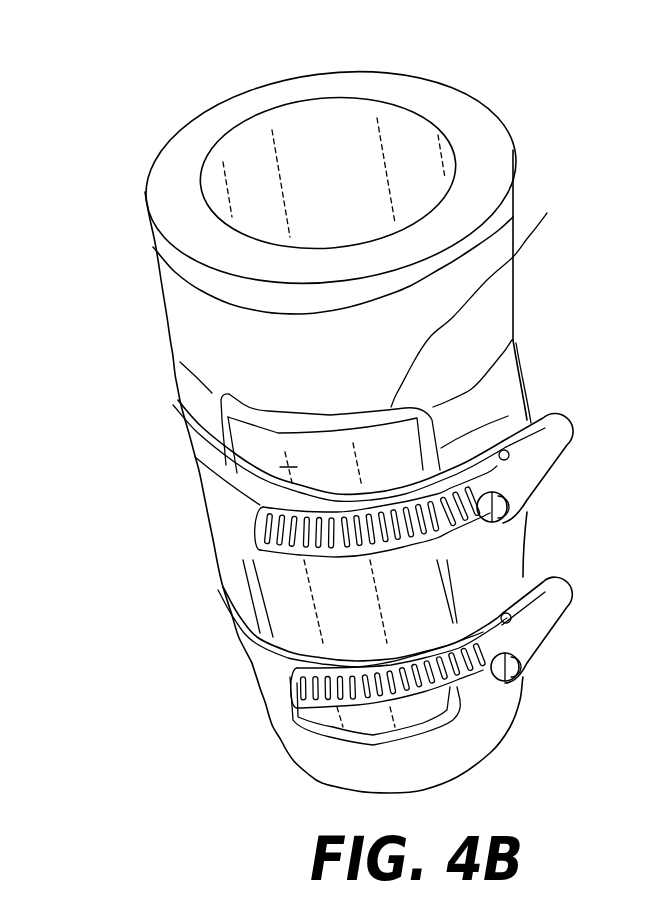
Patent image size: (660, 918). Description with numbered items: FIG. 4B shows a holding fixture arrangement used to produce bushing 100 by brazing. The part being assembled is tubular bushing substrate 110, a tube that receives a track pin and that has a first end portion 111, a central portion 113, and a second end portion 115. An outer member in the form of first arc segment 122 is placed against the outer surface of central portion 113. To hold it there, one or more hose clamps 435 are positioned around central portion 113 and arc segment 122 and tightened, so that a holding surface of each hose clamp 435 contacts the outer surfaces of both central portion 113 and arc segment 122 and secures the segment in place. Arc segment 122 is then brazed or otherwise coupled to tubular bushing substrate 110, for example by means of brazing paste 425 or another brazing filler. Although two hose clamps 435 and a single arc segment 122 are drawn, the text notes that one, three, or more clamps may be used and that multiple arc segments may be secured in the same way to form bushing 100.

The bushing 100 is at (586, 106).
The tubular bushing substrate 110 is at (155, 164).
The first end portion 111 is at (502, 304).
The central portion 113 is at (483, 394).
The second end portion 115 is at (487, 715).
The first arc segment 122 is at (213, 396).
The brazing paste 425 is at (530, 235).
The hose clamp 435 is at (568, 461).